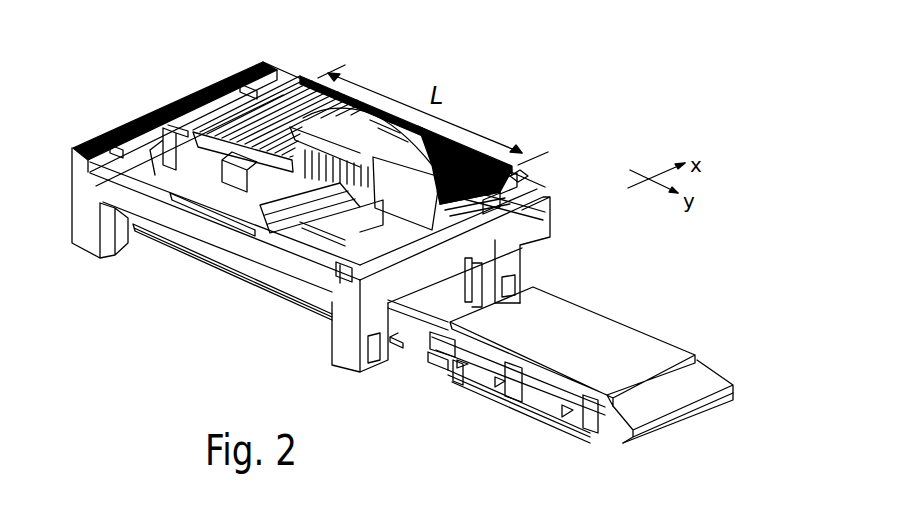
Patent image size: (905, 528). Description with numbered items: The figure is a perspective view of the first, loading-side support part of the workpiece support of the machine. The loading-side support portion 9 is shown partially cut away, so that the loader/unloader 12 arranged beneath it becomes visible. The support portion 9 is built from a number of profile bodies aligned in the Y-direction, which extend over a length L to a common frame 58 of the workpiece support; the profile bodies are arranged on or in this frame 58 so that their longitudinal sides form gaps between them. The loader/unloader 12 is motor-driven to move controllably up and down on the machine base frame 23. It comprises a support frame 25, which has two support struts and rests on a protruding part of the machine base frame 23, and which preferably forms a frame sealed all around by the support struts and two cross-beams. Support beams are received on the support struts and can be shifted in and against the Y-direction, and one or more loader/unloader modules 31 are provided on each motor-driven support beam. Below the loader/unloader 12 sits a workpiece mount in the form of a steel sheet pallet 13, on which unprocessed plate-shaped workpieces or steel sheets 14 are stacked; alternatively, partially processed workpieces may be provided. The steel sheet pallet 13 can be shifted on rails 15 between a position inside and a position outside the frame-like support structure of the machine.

The loading-side support portion 9 is at (311, 78).
The loader/unloader 12 is at (327, 236).
The steel sheet pallet 13 is at (701, 380).
The steel sheet 14 is at (594, 333).
The rail 15 is at (398, 350).
The machine base frame 23 is at (83, 235).
The support frame 25 is at (162, 177).
The loader/unloader module 31 is at (343, 242).
The frame 58 is at (512, 176).